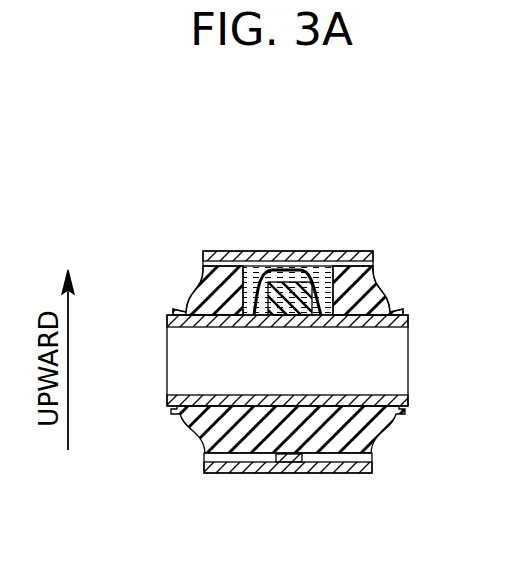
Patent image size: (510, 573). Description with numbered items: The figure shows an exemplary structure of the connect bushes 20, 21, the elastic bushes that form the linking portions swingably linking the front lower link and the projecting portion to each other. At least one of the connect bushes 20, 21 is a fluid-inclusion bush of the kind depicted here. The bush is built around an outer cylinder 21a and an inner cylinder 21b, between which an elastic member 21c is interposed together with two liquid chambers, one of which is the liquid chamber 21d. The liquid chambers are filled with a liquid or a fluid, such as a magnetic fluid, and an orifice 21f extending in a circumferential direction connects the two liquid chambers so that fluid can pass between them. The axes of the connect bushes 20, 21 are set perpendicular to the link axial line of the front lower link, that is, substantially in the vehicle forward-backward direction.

The connect bush 20 is at (371, 223).
The connect bush 21 is at (299, 341).
The outer cylinder 21a is at (262, 252).
The inner cylinder 21b is at (186, 310).
The elastic member 21c is at (365, 422).
The liquid chamber 21d is at (312, 252).
The orifice 21f is at (295, 464).